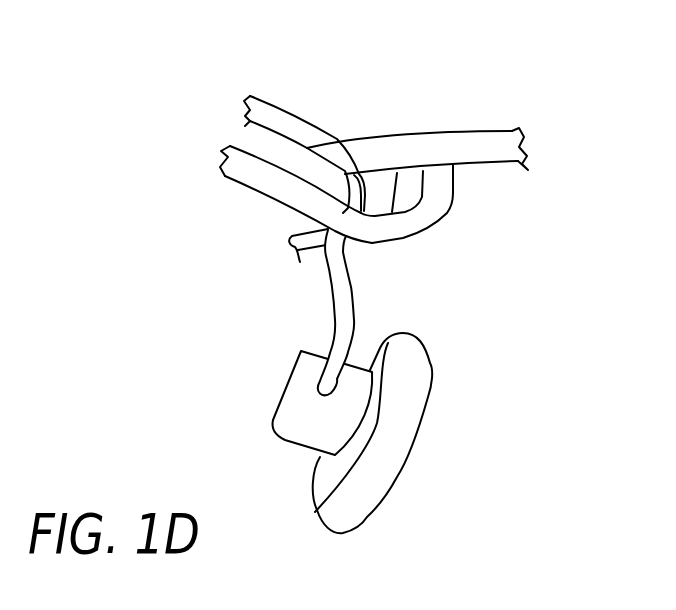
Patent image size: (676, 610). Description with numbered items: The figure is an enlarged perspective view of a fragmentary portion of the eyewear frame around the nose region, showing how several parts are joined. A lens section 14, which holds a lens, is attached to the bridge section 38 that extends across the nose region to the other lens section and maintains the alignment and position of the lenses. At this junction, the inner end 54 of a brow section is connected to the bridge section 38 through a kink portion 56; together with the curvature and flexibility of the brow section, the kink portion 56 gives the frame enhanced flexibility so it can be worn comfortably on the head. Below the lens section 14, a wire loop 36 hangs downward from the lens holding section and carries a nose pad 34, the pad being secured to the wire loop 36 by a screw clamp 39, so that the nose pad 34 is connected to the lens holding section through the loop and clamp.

The lens section 14 is at (232, 181).
The nose pad 34 is at (432, 392).
The wire loop 36 is at (325, 281).
The bridge section 38 is at (486, 130).
The screw clamp 39 is at (283, 393).
The inner end 54 is at (397, 173).
The kink portion 56 is at (310, 125).